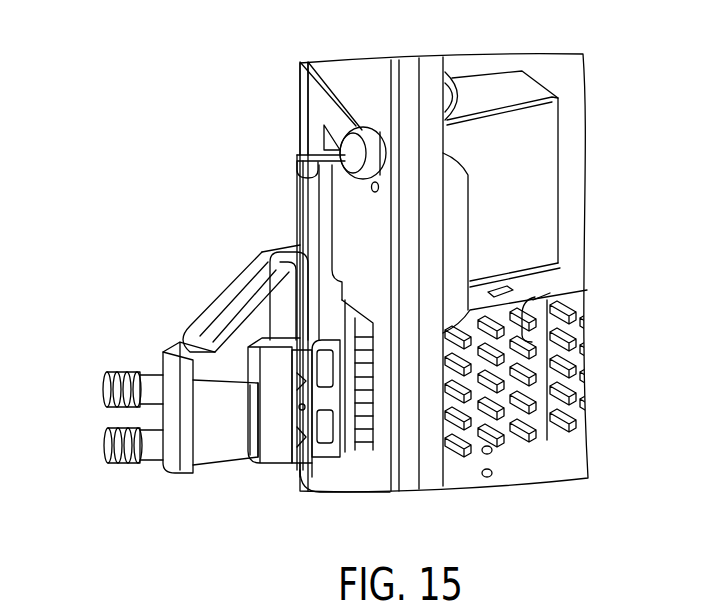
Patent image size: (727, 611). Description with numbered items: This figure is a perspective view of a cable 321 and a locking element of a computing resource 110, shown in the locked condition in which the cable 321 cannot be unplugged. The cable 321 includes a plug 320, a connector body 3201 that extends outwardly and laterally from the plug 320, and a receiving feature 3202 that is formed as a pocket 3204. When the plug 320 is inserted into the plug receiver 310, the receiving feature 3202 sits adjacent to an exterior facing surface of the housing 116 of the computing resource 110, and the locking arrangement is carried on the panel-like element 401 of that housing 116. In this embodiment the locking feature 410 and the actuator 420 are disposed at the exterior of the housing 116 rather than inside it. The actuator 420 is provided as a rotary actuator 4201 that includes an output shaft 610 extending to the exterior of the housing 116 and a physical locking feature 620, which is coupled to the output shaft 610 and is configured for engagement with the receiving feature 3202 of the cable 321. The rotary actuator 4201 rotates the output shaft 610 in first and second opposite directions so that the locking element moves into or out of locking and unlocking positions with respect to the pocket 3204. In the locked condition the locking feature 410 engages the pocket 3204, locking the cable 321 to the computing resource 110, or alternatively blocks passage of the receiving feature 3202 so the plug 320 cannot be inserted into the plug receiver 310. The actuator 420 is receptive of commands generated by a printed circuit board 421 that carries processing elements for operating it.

The computing resource 110 is at (318, 88).
The housing 116 is at (318, 115).
The plug receiver 310 is at (353, 443).
The plug 320 is at (147, 374).
The cable 321 is at (105, 388).
The connector body 3201 is at (207, 348).
The receiving feature 3202 is at (237, 327).
The pocket 3204 is at (290, 293).
The panel 401 is at (583, 150).
The locking feature 410 is at (362, 128).
The actuator 420 is at (545, 255).
The rotary actuator 4201 is at (530, 168).
The printed circuit board 421 is at (568, 465).
The output shaft 610 is at (318, 148).
The physical locking feature 620 is at (312, 213).